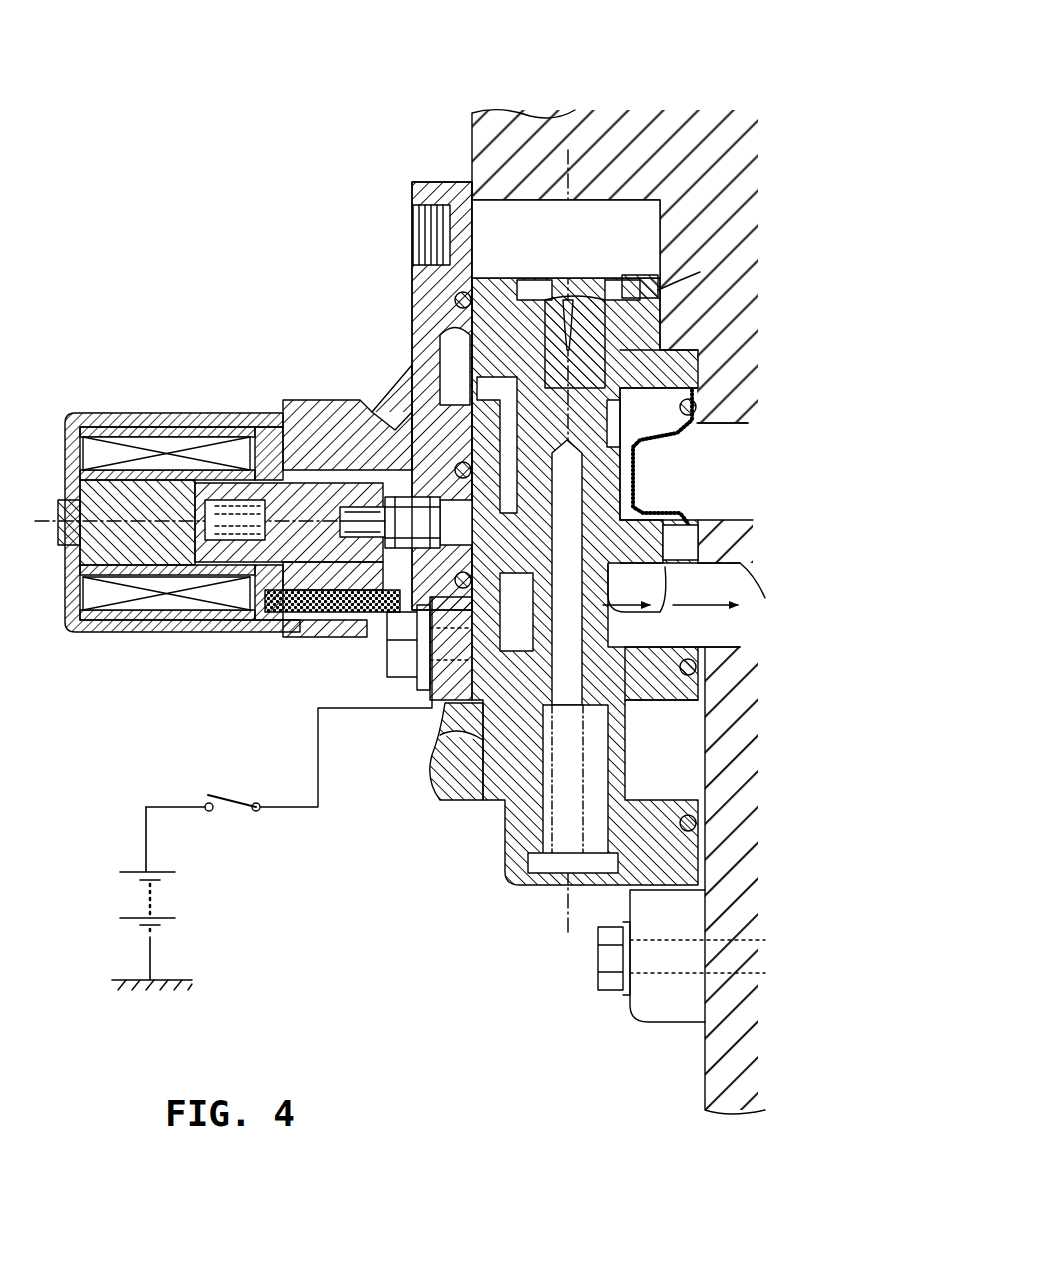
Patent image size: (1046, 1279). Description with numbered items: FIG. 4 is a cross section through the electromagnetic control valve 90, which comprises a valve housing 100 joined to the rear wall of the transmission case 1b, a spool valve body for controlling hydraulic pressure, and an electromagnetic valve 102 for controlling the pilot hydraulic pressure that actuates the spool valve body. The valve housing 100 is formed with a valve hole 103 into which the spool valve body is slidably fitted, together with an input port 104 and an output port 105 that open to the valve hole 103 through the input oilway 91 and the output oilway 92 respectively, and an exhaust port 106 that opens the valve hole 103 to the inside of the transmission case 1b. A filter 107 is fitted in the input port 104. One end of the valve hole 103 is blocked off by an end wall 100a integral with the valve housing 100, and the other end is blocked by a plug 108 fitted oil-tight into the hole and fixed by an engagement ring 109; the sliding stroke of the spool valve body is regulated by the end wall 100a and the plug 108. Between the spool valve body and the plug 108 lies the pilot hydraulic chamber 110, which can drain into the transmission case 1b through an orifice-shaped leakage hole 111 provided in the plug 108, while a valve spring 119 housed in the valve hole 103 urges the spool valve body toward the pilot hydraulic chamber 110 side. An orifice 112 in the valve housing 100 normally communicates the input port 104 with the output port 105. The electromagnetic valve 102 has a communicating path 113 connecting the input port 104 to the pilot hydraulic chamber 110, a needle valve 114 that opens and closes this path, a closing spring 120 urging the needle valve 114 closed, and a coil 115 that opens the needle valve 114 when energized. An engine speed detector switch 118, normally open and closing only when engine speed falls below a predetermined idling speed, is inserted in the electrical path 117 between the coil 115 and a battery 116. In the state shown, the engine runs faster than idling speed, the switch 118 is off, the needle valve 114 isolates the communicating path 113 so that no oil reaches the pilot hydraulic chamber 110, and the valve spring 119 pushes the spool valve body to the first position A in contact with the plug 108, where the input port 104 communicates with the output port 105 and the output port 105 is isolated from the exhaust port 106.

The transmission case 1b is at (697, 130).
The electromagnetic control valve 90 is at (273, 360).
The input oilway 91 is at (746, 425).
The output oilway 92 is at (733, 570).
The valve housing 100 is at (500, 883).
The end wall 100a is at (590, 887).
The electromagnetic valve 102 is at (180, 412).
The valve hole 103 is at (700, 390).
The input port 104 is at (640, 503).
The output port 105 is at (675, 648).
The exhaust port 106 is at (473, 760).
The filter 107 is at (637, 467).
The plug 108 is at (585, 300).
The engagement ring 109 is at (667, 287).
The pilot hydraulic chamber 110 is at (665, 353).
The leakage hole 111 is at (557, 310).
The orifice 112 is at (670, 605).
The communicating path 113 is at (405, 425).
The needle valve 114 is at (363, 527).
The coil 115 is at (227, 597).
The battery 116 is at (130, 867).
The wire 117 is at (297, 808).
The engine speed detector switch 118 is at (228, 793).
The valve spring 119 is at (610, 713).
The closing spring 120 is at (217, 533).